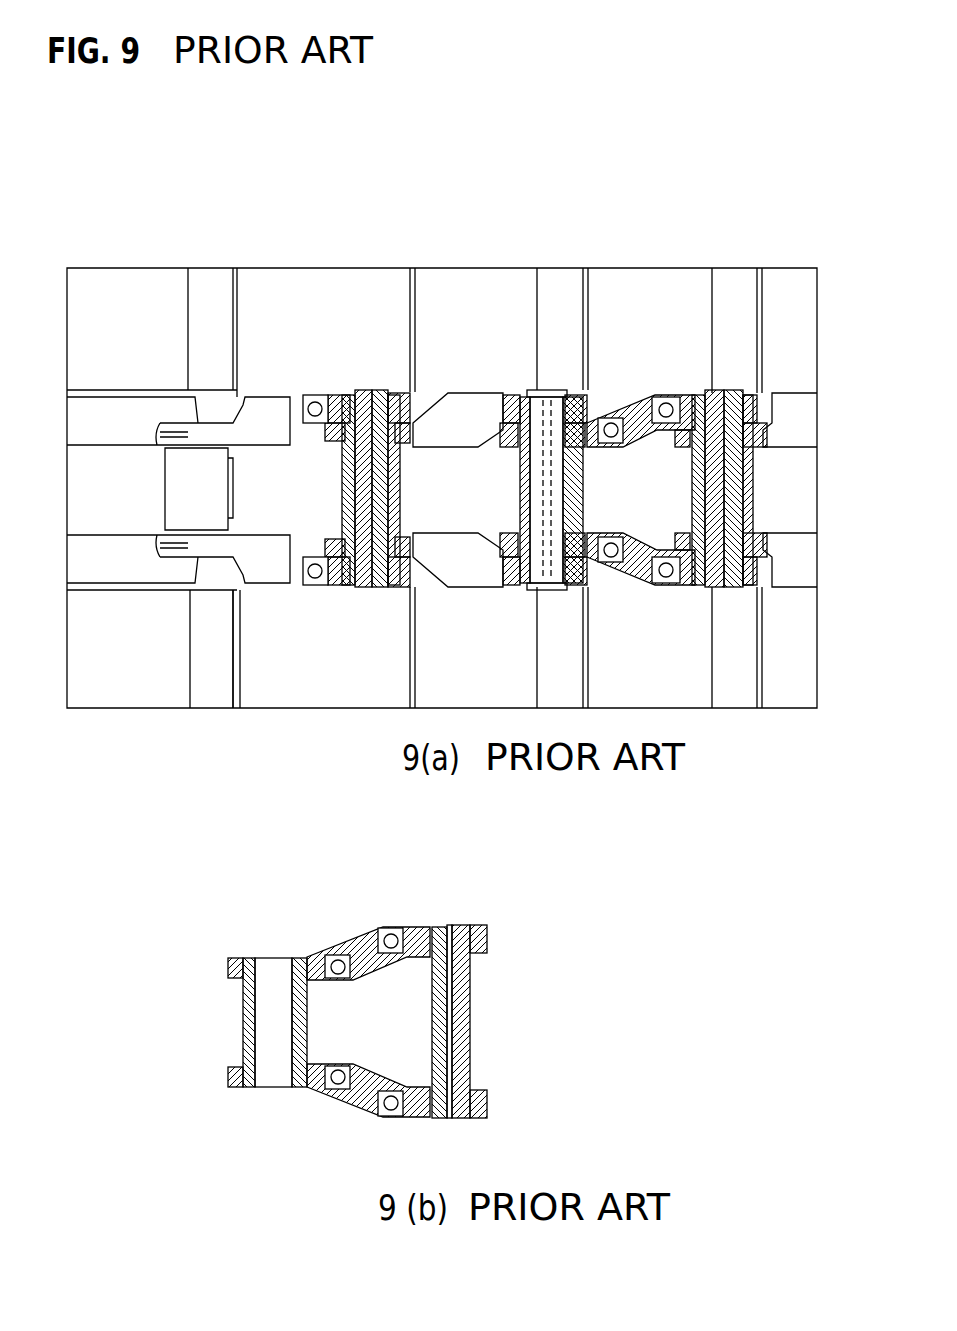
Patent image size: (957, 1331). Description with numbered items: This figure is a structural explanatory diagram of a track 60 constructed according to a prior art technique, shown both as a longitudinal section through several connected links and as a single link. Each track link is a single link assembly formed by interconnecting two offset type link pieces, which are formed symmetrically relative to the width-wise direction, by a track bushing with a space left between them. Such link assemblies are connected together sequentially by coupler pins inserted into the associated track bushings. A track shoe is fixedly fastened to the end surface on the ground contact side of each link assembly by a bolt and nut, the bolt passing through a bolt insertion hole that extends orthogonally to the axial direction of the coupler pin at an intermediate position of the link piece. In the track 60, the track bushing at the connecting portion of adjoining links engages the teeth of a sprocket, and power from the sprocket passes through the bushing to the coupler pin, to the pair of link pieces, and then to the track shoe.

The track 60 is at (738, 246).